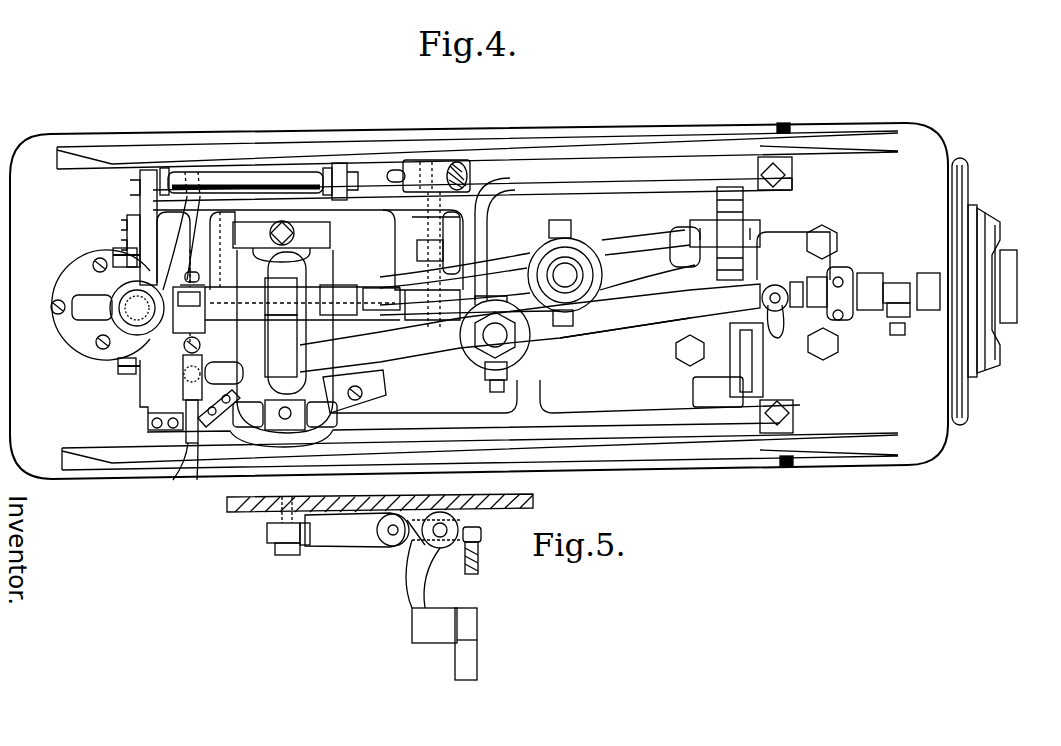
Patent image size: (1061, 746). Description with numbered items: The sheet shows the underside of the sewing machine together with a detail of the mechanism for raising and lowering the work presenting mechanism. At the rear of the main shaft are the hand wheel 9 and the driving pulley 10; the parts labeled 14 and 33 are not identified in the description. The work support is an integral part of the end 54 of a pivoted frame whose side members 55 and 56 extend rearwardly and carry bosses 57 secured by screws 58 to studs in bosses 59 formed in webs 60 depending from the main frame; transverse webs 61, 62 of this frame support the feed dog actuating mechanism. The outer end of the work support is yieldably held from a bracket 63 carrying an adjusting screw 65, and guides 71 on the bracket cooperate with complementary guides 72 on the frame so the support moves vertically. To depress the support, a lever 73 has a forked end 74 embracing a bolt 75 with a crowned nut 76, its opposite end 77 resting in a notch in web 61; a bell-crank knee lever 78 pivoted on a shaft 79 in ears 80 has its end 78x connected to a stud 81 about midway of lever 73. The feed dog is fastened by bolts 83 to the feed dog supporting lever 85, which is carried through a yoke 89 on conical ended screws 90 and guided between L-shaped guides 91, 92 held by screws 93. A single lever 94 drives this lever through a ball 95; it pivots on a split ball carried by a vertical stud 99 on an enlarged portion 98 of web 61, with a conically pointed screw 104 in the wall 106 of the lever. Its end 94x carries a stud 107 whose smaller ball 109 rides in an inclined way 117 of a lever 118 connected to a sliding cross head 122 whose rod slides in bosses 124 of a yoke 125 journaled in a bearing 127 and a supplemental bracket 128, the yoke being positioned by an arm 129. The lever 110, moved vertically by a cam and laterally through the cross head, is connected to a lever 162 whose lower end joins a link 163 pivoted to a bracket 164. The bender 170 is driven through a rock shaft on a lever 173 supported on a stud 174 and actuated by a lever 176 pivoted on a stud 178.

In FIG. 4, the hand wheel 9 is at (961, 166).
In FIG. 4, the driving pulley 10 is at (996, 212).
In FIG. 4, the hub 14 is at (1012, 275).
In FIG. 4, the cross block 33 is at (250, 405).
In FIG. 4, the end of frame 54 is at (142, 228).
In FIG. 4, the side member 55 is at (610, 418).
In FIG. 4, the side member 56 is at (682, 185).
In FIG. 4, the bosses 57 is at (792, 180).
In FIG. 4, the screws 58 is at (790, 172).
In FIG. 4, the bosses 59 is at (785, 124).
In FIG. 4, the flanges or webs 60 is at (605, 147).
In FIG. 4, the transverse web 61 is at (477, 242).
In FIG. 5, the transverse web 61 is at (480, 557).
In FIG. 4, the transverse web 62 is at (222, 272).
In FIG. 4, the bracket 63 is at (128, 330).
In FIG. 4, the adjusting screw 65 is at (125, 312).
In FIG. 4, the guides 71 is at (115, 258).
In FIG. 4, the complementary guides 72 is at (118, 248).
In FIG. 4, the lever 73 is at (318, 293).
In FIG. 5, the lever 73 is at (352, 548).
In FIG. 4, the forked end 74 is at (282, 310).
In FIG. 5, the forked end 74 is at (272, 542).
In FIG. 5, the bolt or stud 75 is at (288, 556).
In FIG. 5, the nut 76 is at (303, 548).
In FIG. 5, the opposite end of lever 77 is at (482, 540).
In FIG. 4, the knee lever 78 is at (391, 176).
In FIG. 5, the knee lever 78 is at (428, 598).
In FIG. 4, the end of knee lever 78x is at (410, 286).
In FIG. 5, the end of knee lever 78x is at (407, 548).
In FIG. 4, the shaft 79 is at (412, 217).
In FIG. 5, the shaft 79 is at (458, 527).
In FIG. 4, the lugs or ears 80 is at (422, 243).
In FIG. 5, the lugs or ears 80 is at (456, 516).
In FIG. 5, the stud 81 is at (378, 530).
In FIG. 4, the bolts 83 is at (188, 272).
In FIG. 4, the feed dog supporting lever 85 is at (180, 253).
In FIG. 4, the yoke 89 is at (250, 175).
In FIG. 4, the conical ended screws 90 is at (170, 172).
In FIG. 4, the L-shaped guide 91 is at (199, 462).
In FIG. 4, the L-shaped guide 92 is at (180, 460).
In FIG. 4, the screws 93 is at (164, 418).
In FIG. 4, the lever 94 is at (427, 358).
In FIG. 4, the end of lever 94x is at (652, 327).
In FIG. 4, the ball 95 is at (184, 376).
In FIG. 4, the enlarged portion 98 is at (503, 338).
In FIG. 4, the vertical stud 99 is at (515, 350).
In FIG. 4, the conically pointed screw 104 is at (494, 388).
In FIG. 4, the wall 106 is at (480, 366).
In FIG. 4, the stud 107 is at (771, 308).
In FIG. 4, the smaller ball 109 is at (797, 307).
In FIG. 4, the lever 110 is at (780, 338).
In FIG. 4, the inclined way 117 is at (797, 263).
In FIG. 4, the lever 118 is at (833, 270).
In FIG. 4, the sliding cross head 122 is at (860, 290).
In FIG. 4, the bosses 124 is at (845, 287).
In FIG. 4, the yoke 125 is at (888, 288).
In FIG. 4, the bearing 127 is at (922, 292).
In FIG. 4, the supplemental bracket 128 is at (922, 316).
In FIG. 4, the arm 129 is at (842, 278).
In FIG. 4, the lever 162 is at (765, 355).
In FIG. 4, the link 163 is at (746, 365).
In FIG. 4, the bracket 164 is at (698, 387).
In FIG. 4, the bender 170 is at (190, 310).
In FIG. 4, the lever 173 is at (305, 340).
In FIG. 4, the stud 174 is at (298, 233).
In FIG. 4, the lever 176 is at (512, 258).
In FIG. 4, the stud 178 is at (572, 268).